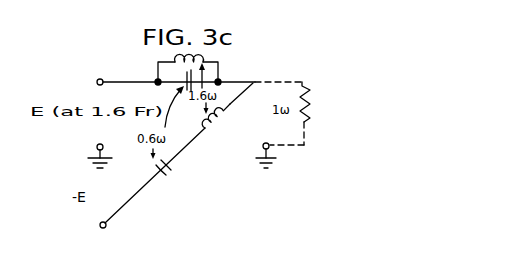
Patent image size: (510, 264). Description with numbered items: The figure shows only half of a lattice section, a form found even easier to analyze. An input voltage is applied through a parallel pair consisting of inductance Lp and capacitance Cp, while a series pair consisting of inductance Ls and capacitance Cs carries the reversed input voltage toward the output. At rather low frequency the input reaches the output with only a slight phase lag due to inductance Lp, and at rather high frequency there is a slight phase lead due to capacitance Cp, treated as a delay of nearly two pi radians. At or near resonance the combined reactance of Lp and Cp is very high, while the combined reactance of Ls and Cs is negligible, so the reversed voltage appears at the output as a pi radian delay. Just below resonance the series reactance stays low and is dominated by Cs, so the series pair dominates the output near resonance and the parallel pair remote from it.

The capacitance Cp is at (185, 76).
The inductance Lp is at (205, 57).
The series inductance Ls is at (224, 114).
The series capacitance Cs is at (170, 172).